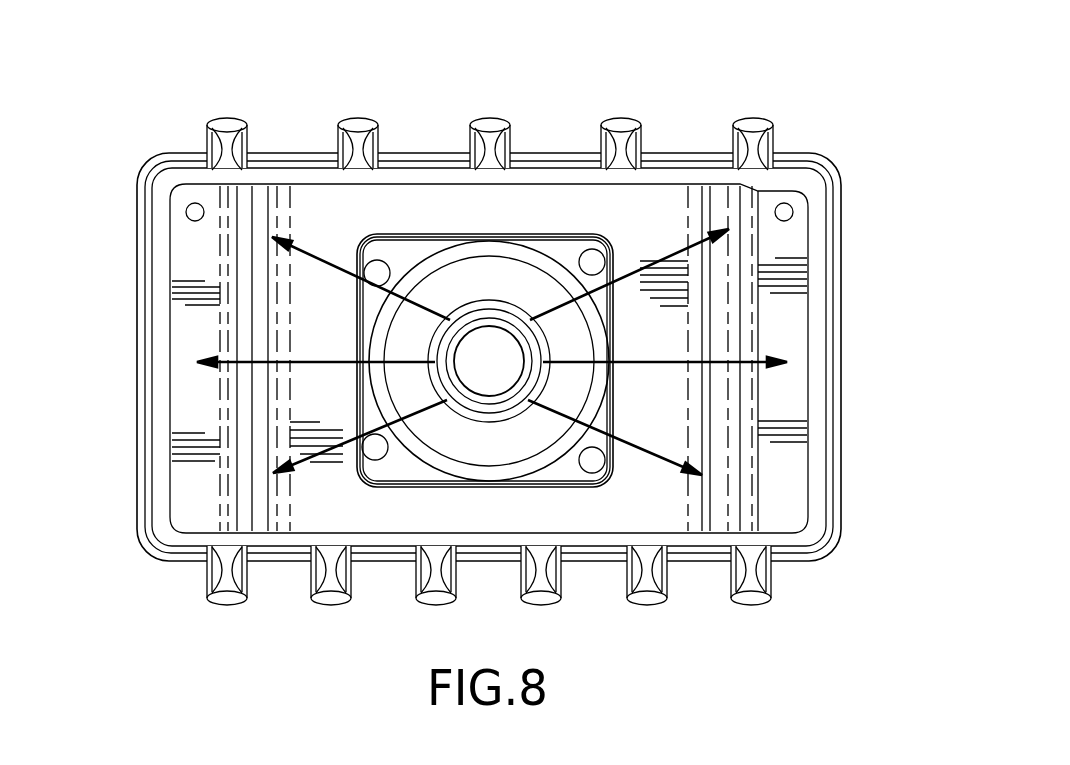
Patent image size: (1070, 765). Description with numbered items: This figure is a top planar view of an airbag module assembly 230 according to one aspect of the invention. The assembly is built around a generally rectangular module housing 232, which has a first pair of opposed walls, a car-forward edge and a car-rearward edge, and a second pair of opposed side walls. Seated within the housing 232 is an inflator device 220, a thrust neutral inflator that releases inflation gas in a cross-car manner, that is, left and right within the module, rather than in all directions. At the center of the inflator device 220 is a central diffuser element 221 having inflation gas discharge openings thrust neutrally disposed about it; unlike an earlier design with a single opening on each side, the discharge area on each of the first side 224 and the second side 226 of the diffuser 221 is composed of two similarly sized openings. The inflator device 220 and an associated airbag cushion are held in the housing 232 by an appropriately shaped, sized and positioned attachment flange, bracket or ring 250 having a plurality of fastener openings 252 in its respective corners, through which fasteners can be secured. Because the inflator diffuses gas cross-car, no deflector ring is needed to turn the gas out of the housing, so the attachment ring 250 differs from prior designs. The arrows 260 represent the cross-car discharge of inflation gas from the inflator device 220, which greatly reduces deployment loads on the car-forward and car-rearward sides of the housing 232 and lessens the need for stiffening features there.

The inflator device 220 is at (530, 443).
The central diffuser element 221 is at (497, 376).
The first side 224 is at (448, 355).
The second side 226 is at (525, 355).
The airbag module assembly 230 is at (565, 337).
The module housing 232 is at (857, 293).
The attachment flange, bracket or ring 250 is at (513, 440).
The fastener openings 252 is at (605, 468).
The arrows 260 is at (250, 362).